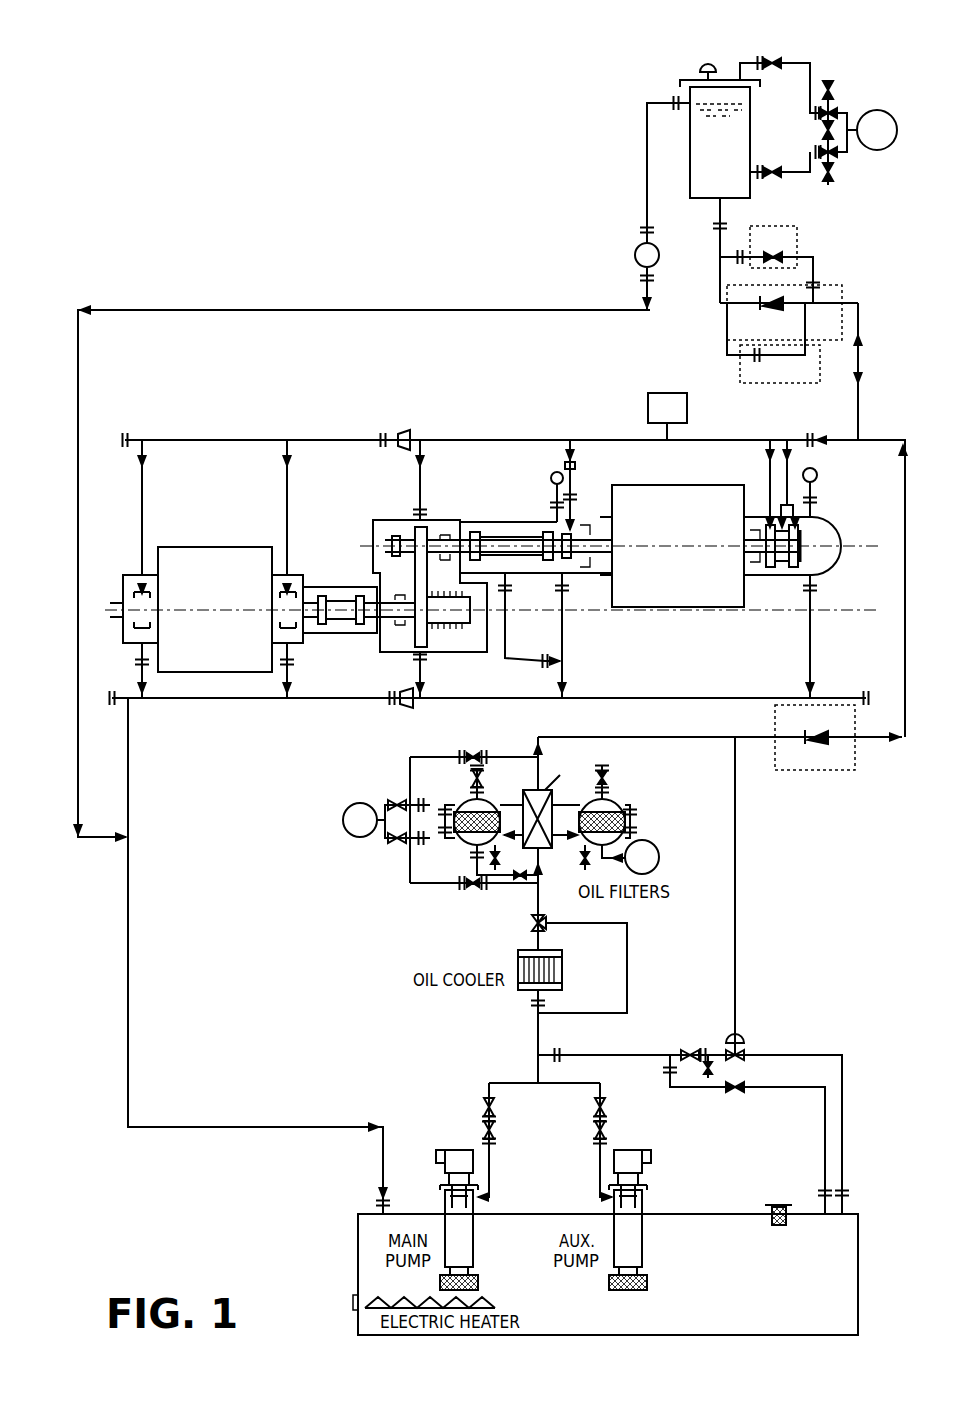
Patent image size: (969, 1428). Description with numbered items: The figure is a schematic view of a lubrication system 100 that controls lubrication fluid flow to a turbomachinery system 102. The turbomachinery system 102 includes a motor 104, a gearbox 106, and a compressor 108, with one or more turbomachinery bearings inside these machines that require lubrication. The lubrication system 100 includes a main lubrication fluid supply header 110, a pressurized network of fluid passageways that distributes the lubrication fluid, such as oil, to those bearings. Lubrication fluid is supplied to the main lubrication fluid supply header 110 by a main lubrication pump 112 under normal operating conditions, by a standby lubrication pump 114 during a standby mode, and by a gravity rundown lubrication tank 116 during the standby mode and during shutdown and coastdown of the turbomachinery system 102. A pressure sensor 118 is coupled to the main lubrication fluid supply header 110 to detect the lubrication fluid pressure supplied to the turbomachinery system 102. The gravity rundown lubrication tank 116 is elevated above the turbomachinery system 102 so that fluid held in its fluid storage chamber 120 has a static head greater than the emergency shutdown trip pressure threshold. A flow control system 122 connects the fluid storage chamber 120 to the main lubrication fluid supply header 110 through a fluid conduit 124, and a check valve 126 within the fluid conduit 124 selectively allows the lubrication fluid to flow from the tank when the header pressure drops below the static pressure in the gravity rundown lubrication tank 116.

The lubrication system 100 is at (290, 223).
The turbomachinery system 102 is at (456, 567).
The motor 104 is at (262, 545).
The gearbox 106 is at (400, 520).
The compressor 108 is at (708, 608).
The main lubrication fluid supply header 110 is at (598, 432).
The main lubrication pump 112 is at (450, 1138).
The standby lubrication pump 114 is at (637, 1138).
The gravity rundown lubrication tank 116 is at (678, 74).
The pressure sensor 118 is at (688, 415).
The fluid storage chamber 120 is at (723, 88).
The flow control system 122 is at (828, 230).
The fluid conduit 124 is at (860, 320).
The check valve 126 is at (717, 323).